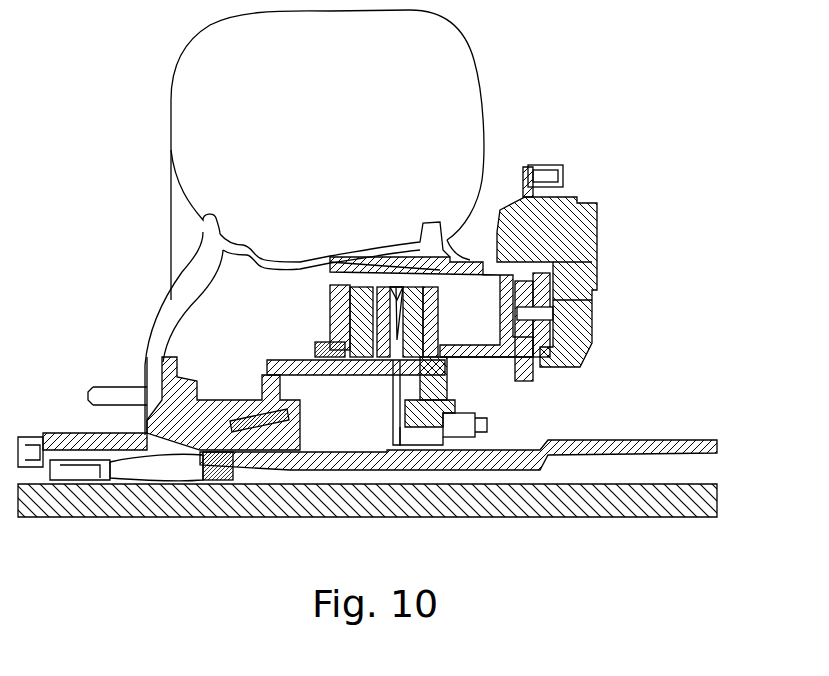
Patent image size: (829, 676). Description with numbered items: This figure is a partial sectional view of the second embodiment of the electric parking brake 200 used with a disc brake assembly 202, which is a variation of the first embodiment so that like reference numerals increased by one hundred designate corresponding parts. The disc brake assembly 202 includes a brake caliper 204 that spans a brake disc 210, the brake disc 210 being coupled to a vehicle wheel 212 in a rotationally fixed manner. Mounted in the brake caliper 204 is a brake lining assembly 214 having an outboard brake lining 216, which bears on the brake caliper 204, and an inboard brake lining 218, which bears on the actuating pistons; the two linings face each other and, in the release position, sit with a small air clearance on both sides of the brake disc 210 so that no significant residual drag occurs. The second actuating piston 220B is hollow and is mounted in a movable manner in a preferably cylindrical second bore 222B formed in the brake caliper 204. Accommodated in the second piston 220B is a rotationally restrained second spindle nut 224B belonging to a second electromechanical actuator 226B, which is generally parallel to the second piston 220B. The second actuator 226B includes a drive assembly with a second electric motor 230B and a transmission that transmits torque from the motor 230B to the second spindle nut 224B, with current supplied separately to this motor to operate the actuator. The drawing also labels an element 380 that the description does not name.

The electric parking brake 200 is at (498, 362).
The disc brake assembly 202 is at (358, 228).
The brake caliper 204 is at (345, 328).
The brake disc 210 is at (332, 318).
The vehicle wheel 212 is at (198, 285).
The brake lining assembly 214 is at (340, 266).
The outboard brake lining 216 is at (358, 300).
The inboard brake lining 218 is at (410, 287).
The second actuating piston 220B is at (450, 256).
The second bore 222B is at (483, 258).
The second spindle nut 224B is at (527, 288).
The second electromechanical actuator 226B is at (540, 140).
The second electric motor 230B is at (560, 324).
The hub 380 is at (552, 229).